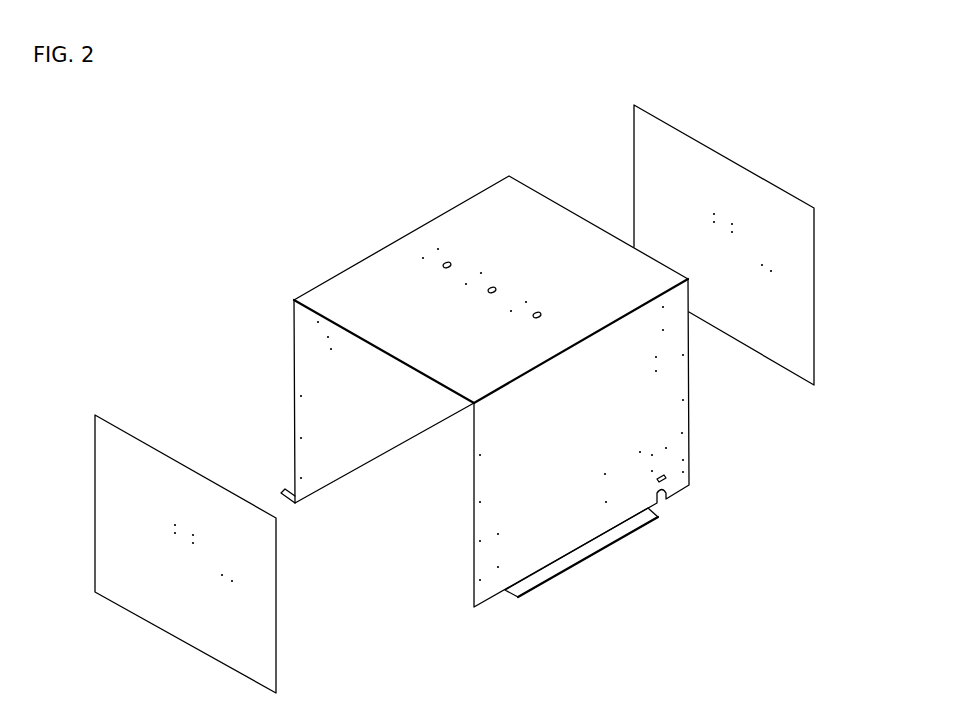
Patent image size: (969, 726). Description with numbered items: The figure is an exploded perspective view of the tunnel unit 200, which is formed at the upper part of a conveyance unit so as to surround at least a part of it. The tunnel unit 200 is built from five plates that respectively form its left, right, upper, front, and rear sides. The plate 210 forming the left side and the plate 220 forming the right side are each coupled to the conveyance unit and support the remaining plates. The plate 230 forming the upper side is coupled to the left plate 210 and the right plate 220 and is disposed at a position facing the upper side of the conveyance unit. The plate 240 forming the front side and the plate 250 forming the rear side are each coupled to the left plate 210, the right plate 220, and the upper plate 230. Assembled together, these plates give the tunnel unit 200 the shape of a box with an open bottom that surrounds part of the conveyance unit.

The tunnel unit 200 is at (177, 183).
The plate forming the left side 210 is at (295, 345).
The plate forming the right side 220 is at (689, 412).
The plate forming the upper side 230 is at (368, 285).
The plate forming the front side 240 is at (95, 489).
The plate forming the rear side 250 is at (814, 288).